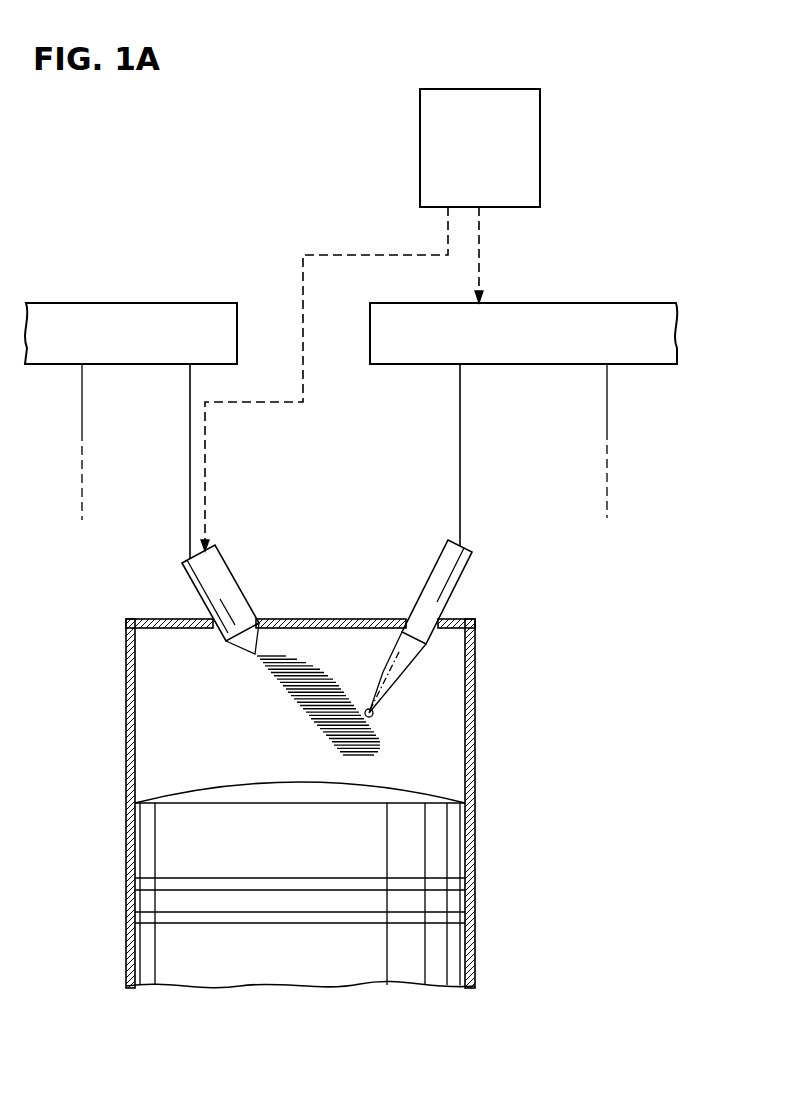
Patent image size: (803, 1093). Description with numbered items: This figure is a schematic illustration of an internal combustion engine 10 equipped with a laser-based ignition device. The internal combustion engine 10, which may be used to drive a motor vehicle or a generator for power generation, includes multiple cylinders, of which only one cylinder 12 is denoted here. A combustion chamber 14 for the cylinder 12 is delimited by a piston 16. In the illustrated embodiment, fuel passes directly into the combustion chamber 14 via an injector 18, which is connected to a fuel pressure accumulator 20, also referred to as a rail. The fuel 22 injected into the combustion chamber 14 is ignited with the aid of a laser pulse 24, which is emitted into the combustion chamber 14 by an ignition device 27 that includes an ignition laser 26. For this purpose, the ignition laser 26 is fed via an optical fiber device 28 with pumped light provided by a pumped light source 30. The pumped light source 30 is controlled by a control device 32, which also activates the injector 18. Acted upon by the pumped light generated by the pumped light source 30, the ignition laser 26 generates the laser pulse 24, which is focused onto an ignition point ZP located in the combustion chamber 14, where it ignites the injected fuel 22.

The internal combustion engine 10 is at (545, 849).
The cylinder 12 is at (470, 763).
The combustion chamber 14 is at (170, 703).
The piston 16 is at (170, 845).
The injector 18 is at (220, 587).
The fuel pressure accumulator 20 is at (135, 318).
The fuel 22 is at (305, 683).
The laser pulse 24 is at (394, 677).
The ignition laser 26 is at (440, 588).
The ignition device 27 is at (592, 168).
The optical fiber device 28 is at (461, 454).
The pumped light source 30 is at (632, 318).
The control device 32 is at (483, 104).
The ignition point ZP is at (373, 716).